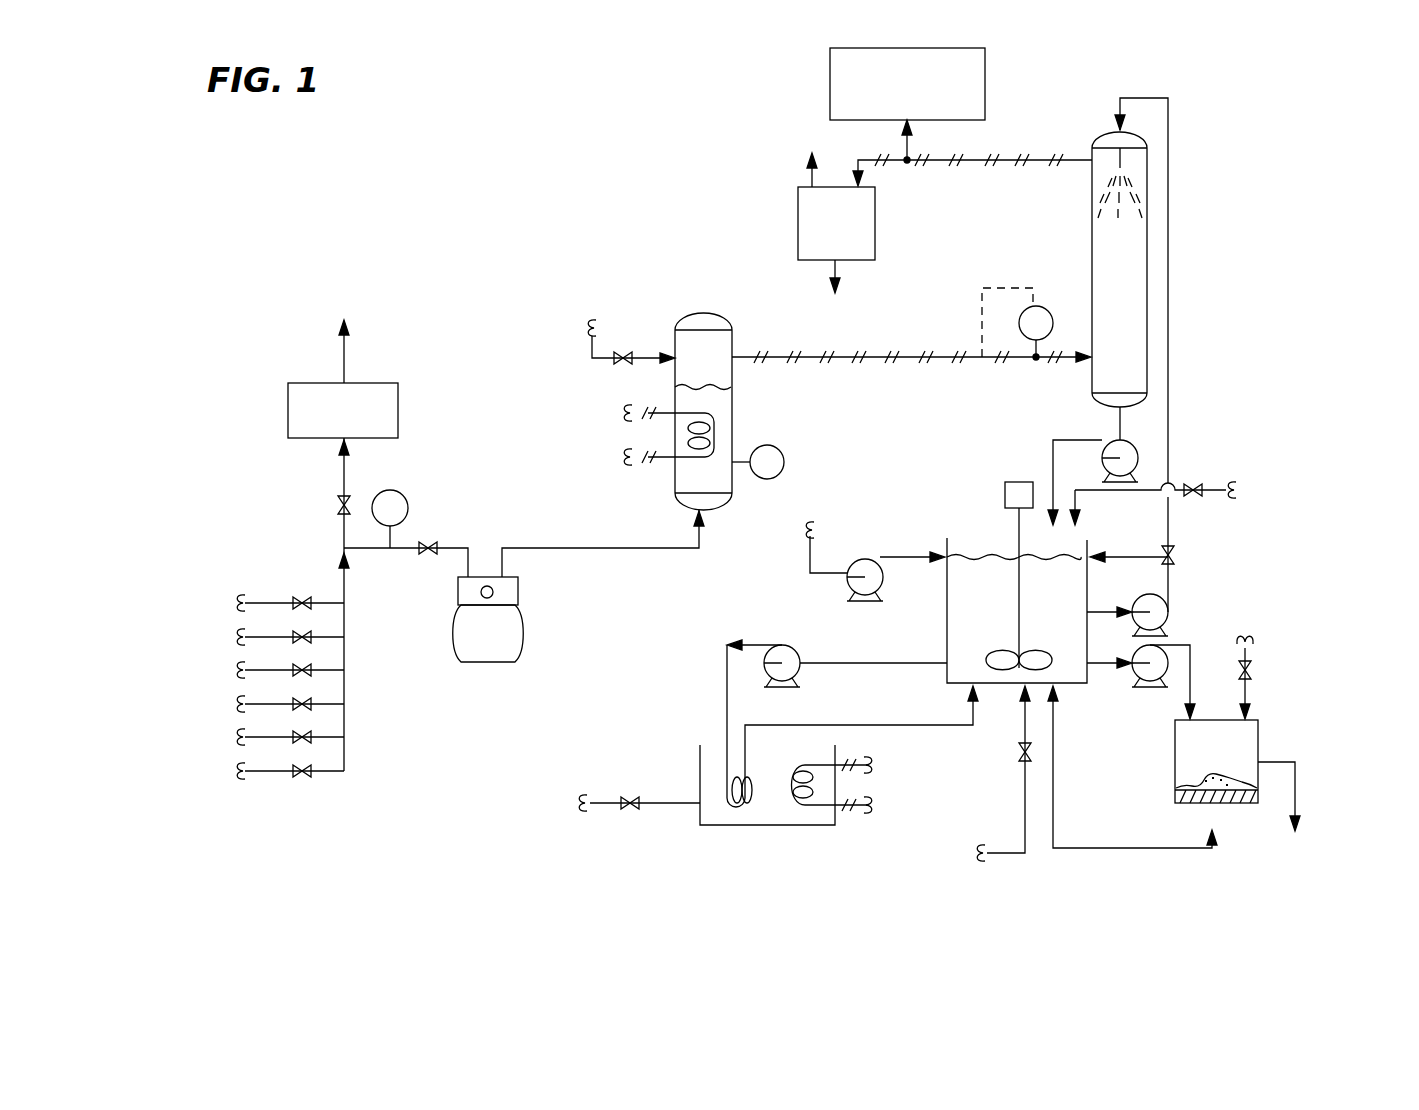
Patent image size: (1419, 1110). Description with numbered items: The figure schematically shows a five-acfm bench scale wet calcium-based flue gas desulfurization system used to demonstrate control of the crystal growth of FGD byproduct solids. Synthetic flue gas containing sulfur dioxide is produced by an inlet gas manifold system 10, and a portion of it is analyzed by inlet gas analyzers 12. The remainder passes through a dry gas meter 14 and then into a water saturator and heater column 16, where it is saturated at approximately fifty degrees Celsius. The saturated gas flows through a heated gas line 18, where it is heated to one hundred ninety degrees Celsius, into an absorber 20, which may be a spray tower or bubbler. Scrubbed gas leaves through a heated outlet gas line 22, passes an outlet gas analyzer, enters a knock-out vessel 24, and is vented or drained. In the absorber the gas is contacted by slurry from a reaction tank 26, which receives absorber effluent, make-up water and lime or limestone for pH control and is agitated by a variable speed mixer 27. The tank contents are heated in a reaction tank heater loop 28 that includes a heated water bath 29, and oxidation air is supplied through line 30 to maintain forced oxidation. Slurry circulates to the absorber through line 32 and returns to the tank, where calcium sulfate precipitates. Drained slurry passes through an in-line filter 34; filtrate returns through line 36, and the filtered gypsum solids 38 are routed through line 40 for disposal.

The inlet gas manifold system 10 is at (344, 683).
The inlet gas analyzers 12 is at (343, 379).
The dry gas meter 14 is at (475, 648).
The water saturator and heater column 16 is at (718, 406).
The heated gas line 18 is at (905, 350).
The absorber 20 is at (1093, 300).
The heated outlet gas line 22 is at (1010, 160).
The knock-out vessel 24 is at (836, 223).
The reaction tank 26 is at (947, 613).
The variable speed mixer 27 is at (1012, 531).
The reaction tank heater loop 28 is at (699, 708).
The heated water bath 29 is at (777, 825).
The oxidation air line 30 is at (1025, 790).
The slurry circulation line 32 is at (1170, 352).
The in-line filter 34 is at (1197, 748).
The filtrate recycle line 36 is at (1153, 848).
The filtered gypsum solids 38 is at (1228, 783).
The solids disposal line 40 is at (1297, 806).